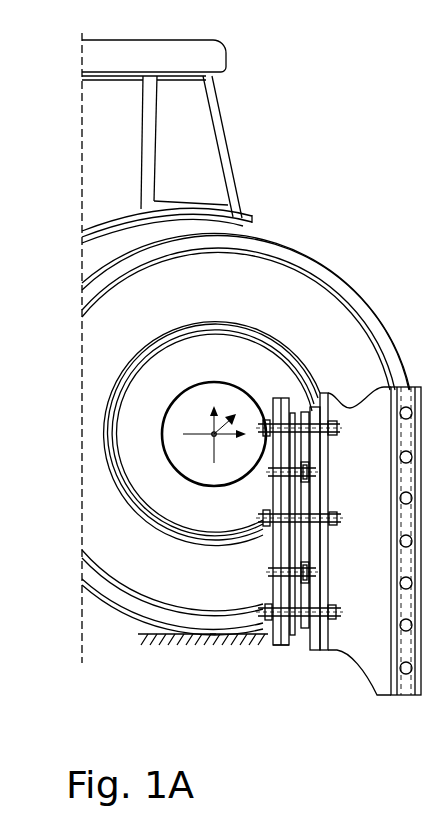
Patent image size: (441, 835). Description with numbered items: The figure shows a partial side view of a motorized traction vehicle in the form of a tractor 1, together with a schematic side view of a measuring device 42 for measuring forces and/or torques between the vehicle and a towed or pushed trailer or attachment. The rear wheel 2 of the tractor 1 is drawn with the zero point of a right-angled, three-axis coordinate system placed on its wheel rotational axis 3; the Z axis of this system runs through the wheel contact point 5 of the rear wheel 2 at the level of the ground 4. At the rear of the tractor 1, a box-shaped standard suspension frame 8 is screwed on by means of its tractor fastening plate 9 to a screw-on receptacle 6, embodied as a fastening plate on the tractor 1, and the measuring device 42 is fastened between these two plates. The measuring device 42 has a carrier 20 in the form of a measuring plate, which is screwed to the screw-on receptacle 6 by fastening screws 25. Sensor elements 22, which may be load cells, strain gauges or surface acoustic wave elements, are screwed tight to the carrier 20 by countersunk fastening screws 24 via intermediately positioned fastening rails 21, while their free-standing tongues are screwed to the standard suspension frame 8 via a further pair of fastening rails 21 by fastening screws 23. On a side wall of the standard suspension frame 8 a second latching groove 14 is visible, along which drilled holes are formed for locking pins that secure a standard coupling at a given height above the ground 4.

The tractor 1 is at (271, 79).
The rear wheel 2 is at (117, 362).
The wheel rotational axis 3 is at (213, 437).
The ground 4 is at (148, 637).
The wheel contact point 5 is at (212, 644).
The screw-on receptacle 6 is at (282, 646).
The standard suspension frame 8 is at (352, 690).
The tractor fastening plate 9 is at (345, 405).
The second latching groove 14 is at (406, 686).
The carrier 20 is at (284, 398).
The fastening rails 21 is at (295, 413).
The sensor elements 22 is at (320, 407).
The fastening screws 23 is at (340, 425).
The countersunk fastening screws 24 is at (309, 468).
The fastening screws 25 is at (270, 416).
The measuring device 42 is at (272, 718).